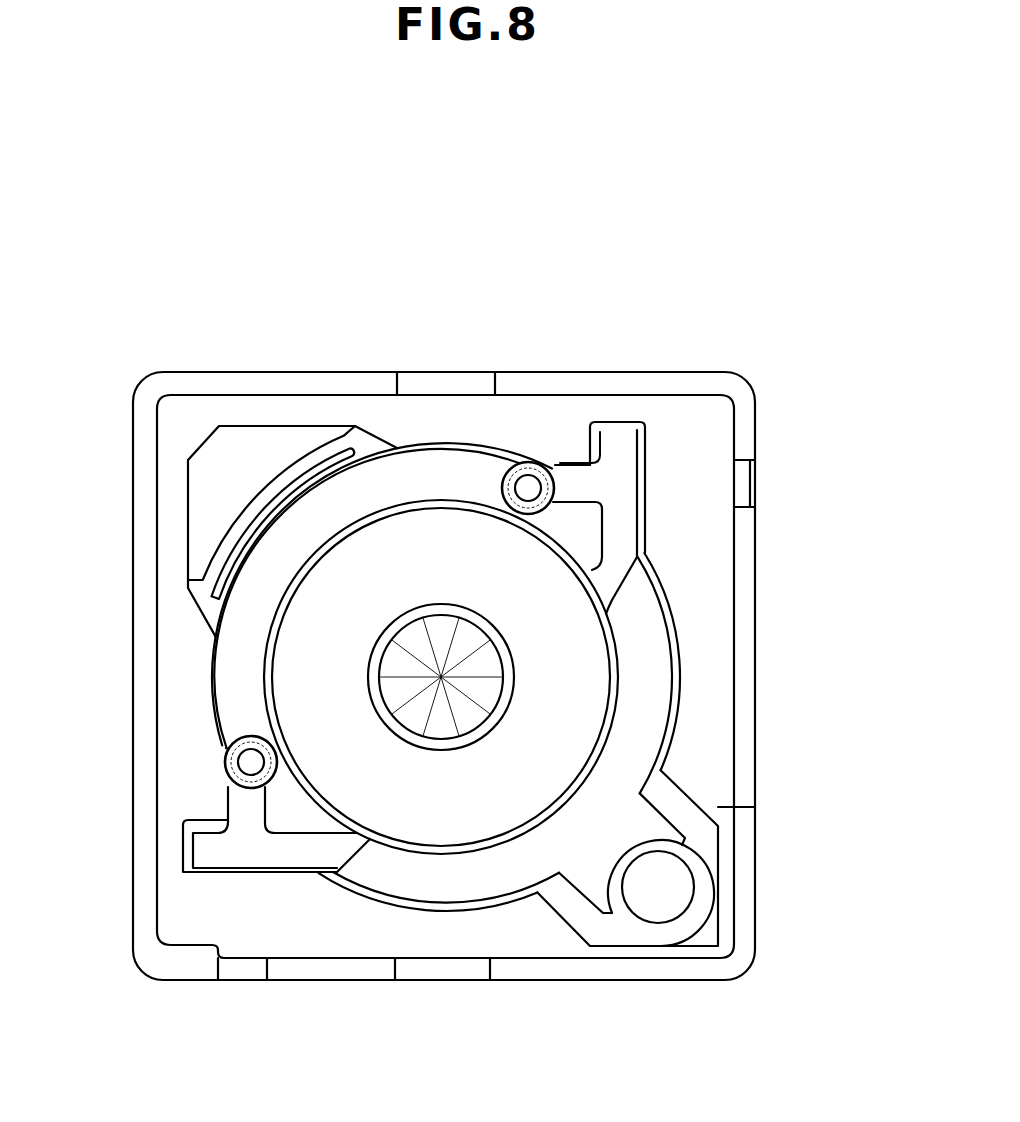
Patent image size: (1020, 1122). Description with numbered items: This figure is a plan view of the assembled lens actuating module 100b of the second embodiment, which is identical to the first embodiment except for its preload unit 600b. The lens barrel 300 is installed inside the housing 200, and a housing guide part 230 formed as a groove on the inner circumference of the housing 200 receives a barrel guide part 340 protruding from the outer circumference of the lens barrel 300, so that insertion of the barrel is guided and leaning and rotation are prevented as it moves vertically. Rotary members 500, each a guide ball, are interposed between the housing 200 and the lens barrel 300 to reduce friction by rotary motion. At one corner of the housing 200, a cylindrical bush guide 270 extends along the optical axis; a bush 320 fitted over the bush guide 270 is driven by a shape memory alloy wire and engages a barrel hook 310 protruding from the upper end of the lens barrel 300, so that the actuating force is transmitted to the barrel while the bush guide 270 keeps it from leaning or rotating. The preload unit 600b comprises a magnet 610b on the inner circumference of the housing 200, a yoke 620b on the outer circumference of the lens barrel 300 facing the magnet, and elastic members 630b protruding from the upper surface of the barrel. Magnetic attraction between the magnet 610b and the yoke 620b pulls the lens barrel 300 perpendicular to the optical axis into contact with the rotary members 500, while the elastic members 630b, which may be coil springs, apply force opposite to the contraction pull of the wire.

The lens actuating module 100b is at (124, 141).
The housing 200 is at (745, 584).
The lens barrel 300 is at (433, 542).
The barrel hook 310 is at (655, 825).
The bush 320 is at (705, 887).
The bush guide 270 is at (662, 892).
The housing guide part 230 is at (624, 421).
The barrel guide part 340 is at (622, 444).
The rotary member 500 is at (599, 428).
The preload unit 600b is at (330, 272).
The magnet 610b is at (242, 453).
The yoke 620b is at (333, 468).
The elastic member 630b is at (553, 470).